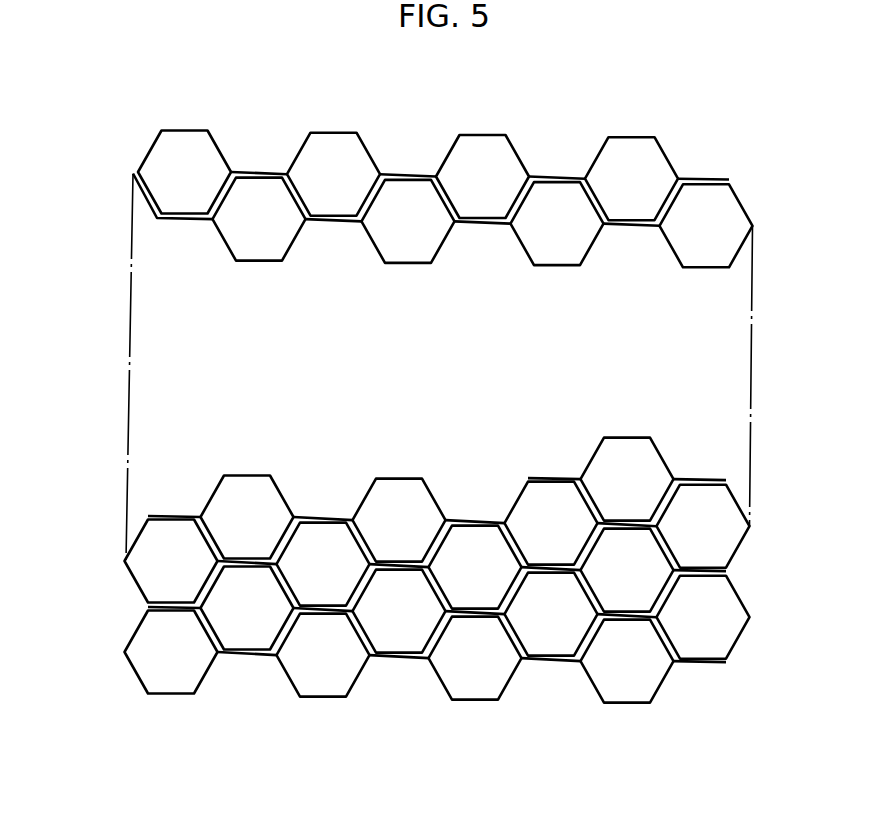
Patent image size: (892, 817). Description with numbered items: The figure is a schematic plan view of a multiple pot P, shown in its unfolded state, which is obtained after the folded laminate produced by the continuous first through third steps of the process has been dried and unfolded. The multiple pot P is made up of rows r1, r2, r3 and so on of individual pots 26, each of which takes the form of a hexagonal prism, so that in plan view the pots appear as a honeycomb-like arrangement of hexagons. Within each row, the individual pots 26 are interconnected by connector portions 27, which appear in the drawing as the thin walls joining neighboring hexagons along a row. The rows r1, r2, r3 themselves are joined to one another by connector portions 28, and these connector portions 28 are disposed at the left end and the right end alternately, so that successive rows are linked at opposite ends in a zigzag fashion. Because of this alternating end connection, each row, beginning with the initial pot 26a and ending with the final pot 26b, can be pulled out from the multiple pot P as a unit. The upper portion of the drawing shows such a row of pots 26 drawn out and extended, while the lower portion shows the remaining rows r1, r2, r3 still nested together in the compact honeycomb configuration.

The individual pot 26 is at (328, 690).
The initial pot 26a is at (625, 692).
The final pot 26b is at (638, 146).
The connector portion 27 is at (560, 175).
The connector portion 28 is at (143, 623).
The multiple pot P is at (737, 157).
The row r1 is at (666, 680).
The row r2 is at (750, 617).
The row r3 is at (109, 558).